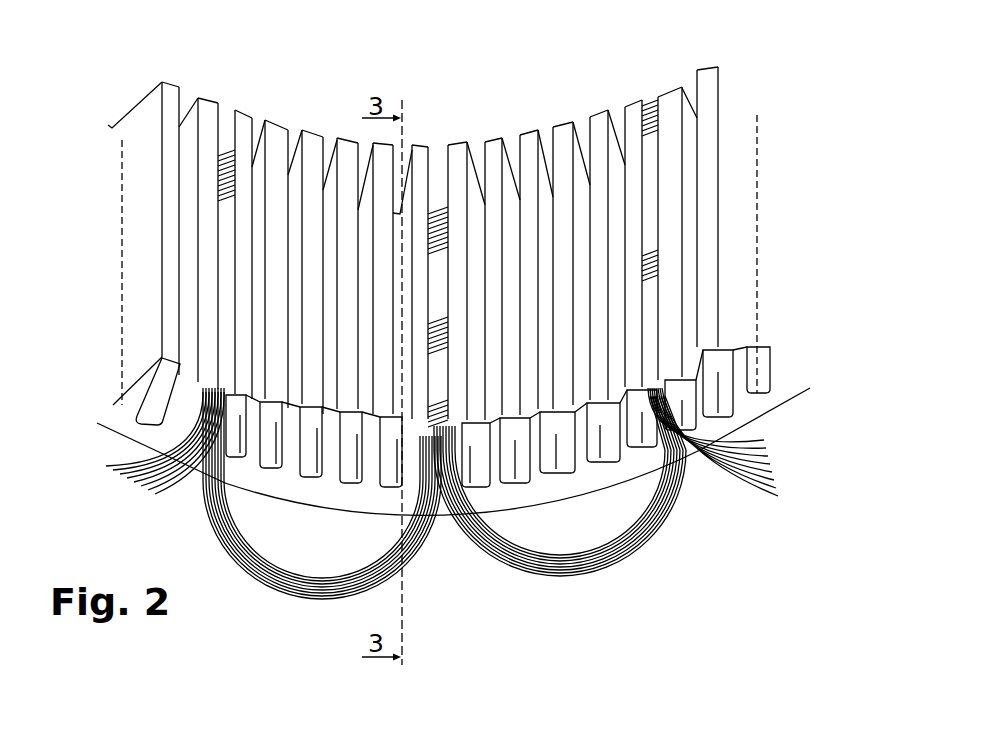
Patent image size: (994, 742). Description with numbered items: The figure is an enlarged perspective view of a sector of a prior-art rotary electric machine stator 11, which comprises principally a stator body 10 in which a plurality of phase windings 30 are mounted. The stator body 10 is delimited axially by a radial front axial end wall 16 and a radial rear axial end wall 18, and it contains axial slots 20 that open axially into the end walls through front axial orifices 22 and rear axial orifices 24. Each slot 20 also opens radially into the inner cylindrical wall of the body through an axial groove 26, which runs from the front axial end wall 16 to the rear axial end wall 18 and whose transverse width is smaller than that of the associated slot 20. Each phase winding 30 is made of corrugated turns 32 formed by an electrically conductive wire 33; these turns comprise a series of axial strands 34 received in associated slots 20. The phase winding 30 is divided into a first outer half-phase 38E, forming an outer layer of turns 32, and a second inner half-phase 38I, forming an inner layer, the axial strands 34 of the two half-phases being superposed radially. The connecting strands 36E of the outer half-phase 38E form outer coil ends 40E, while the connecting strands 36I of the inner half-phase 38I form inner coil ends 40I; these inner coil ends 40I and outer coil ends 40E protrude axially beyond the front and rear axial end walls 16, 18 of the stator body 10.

The stator body 10 is at (82, 277).
The rotary electric machine stator 11 is at (55, 103).
The radial front axial end wall 16 is at (118, 432).
The radial rear axial end wall 18 is at (212, 98).
The axial slot 20 is at (583, 190).
The front axial orifice 22 is at (524, 472).
The rear axial orifice 24 is at (518, 207).
The axial groove 26 is at (478, 213).
The phase winding 30 is at (670, 550).
The corrugated turn 32 is at (628, 572).
The electrically conductive wire 33 is at (750, 500).
The axial strand 34 is at (648, 180).
The connecting strand of the first outer half-phase 36E is at (482, 557).
The connecting strand of the second inner half-phase 36I is at (262, 567).
The first outer half-phase 38E is at (700, 520).
The second inner half-phase 38I is at (700, 378).
The outer coil end 40E is at (550, 592).
The inner coil end 40I is at (345, 612).